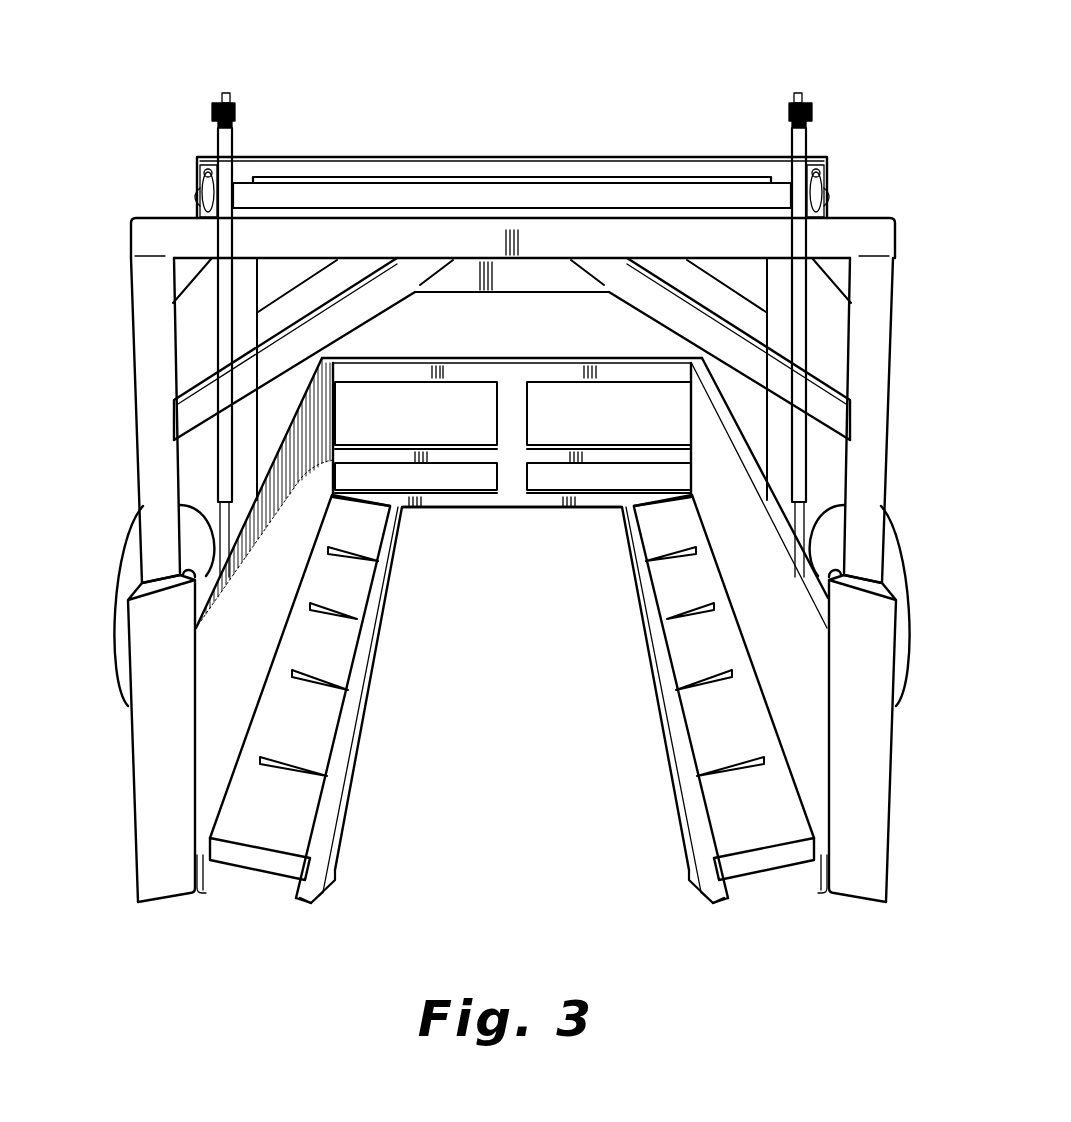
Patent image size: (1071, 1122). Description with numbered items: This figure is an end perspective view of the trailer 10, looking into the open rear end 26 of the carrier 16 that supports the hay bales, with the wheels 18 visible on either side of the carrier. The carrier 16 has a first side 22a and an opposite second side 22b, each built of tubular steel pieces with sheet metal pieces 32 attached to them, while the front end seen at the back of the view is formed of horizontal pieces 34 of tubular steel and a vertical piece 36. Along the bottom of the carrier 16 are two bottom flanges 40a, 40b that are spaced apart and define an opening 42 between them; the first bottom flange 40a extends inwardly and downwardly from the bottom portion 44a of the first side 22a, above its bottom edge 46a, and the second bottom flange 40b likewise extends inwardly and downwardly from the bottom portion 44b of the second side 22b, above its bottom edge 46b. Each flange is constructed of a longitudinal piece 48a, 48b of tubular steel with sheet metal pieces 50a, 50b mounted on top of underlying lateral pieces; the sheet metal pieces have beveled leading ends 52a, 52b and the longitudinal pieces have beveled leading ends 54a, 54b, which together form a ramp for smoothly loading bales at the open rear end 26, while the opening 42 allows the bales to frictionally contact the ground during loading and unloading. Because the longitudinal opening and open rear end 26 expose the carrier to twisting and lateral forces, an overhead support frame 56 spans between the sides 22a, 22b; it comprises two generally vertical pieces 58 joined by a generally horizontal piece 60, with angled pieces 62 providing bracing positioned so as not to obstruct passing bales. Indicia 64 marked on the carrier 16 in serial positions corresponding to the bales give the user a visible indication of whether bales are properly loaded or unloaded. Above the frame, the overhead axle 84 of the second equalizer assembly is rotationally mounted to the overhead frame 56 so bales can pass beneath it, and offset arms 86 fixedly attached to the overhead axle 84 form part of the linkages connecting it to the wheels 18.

The trailer 10 is at (506, 88).
The carrier 16 is at (128, 893).
The wheels 18 is at (113, 520).
The first side 22a is at (305, 513).
The second side 22b is at (725, 519).
The rear end 26 is at (502, 864).
The sheet metal pieces 32 is at (242, 626).
The horizontal pieces 34 is at (458, 358).
The vertical piece 36 is at (533, 400).
The first bottom flange 40a is at (388, 626).
The second bottom flange 40b is at (650, 677).
The opening 42 is at (502, 671).
The bottom portion of first side 44a is at (200, 868).
The bottom portion of second side 44b is at (818, 870).
The bottom edge of first side bottom portion 46a is at (215, 875).
The bottom edge of second side bottom portion 46b is at (815, 875).
The longitudinal piece 48a is at (350, 733).
The longitudinal piece 48b is at (685, 790).
The sheet metal piece 50a is at (330, 695).
The sheet metal piece 50b is at (700, 729).
The beveled leading end 52a is at (273, 867).
The beveled leading end 52b is at (755, 860).
The beveled leading end 54a is at (310, 888).
The beveled leading end 54b is at (700, 893).
The overhead support frame 56 is at (605, 144).
The vertical pieces 58 is at (132, 277).
The horizontal piece 60 is at (898, 220).
The angled pieces 62 is at (195, 378).
The indicia 64 is at (308, 775).
The overhead axle 84 is at (362, 183).
The offset arms 86 is at (237, 132).